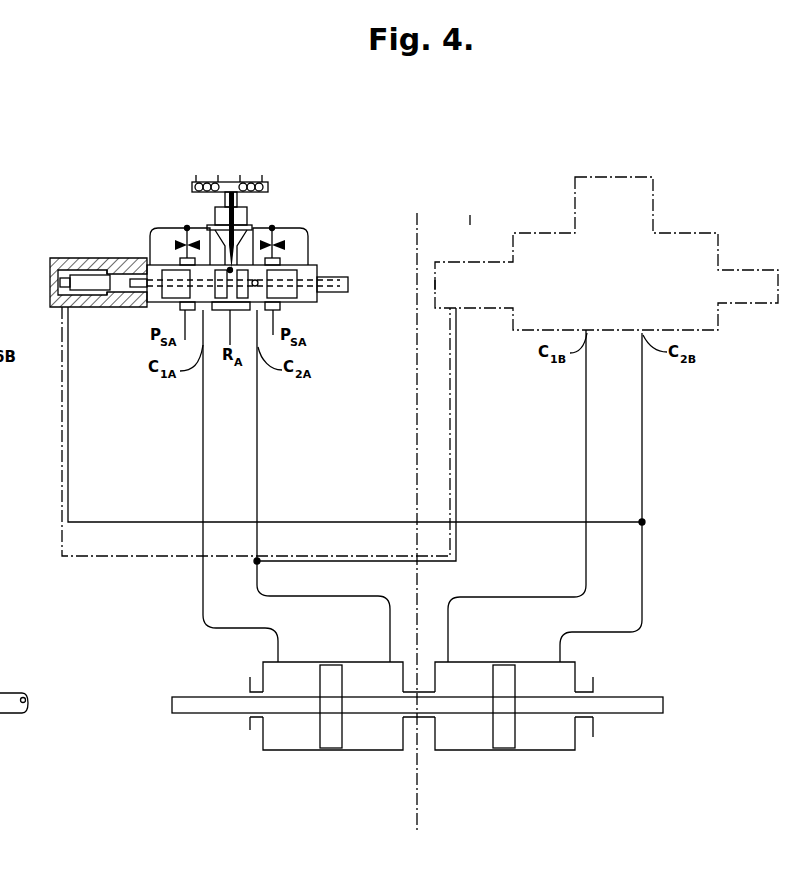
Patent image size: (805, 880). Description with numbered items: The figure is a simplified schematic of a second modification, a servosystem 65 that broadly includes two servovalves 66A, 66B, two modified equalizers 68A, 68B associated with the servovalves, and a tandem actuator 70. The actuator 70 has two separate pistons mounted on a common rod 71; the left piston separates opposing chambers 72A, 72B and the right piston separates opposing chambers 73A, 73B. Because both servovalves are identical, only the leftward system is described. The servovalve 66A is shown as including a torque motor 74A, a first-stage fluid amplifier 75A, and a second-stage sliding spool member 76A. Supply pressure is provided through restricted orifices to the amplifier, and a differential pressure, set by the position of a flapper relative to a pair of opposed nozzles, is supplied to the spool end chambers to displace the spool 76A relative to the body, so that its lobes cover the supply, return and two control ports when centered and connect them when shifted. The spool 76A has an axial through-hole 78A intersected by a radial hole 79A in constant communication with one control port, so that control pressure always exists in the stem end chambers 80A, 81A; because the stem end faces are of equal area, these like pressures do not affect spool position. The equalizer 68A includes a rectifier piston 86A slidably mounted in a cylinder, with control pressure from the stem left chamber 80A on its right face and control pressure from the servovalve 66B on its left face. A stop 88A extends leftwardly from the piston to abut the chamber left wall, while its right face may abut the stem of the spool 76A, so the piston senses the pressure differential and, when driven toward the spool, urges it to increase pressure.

The servosystem 65 is at (476, 180).
The servovalve 66A is at (316, 164).
The servovalve 66B is at (693, 192).
The equalizer 68A is at (85, 236).
The equalizer 68B is at (472, 250).
The tandem actuator 70 is at (424, 754).
The common rod 71 is at (630, 708).
The chamber 72A is at (342, 706).
The chamber 72B is at (351, 706).
The chamber 73A is at (514, 706).
The chamber 73B is at (525, 706).
The torque motor 74A is at (180, 165).
The first-stage fluid amplifier 75A is at (196, 210).
The second-stage sliding spool member 76A is at (290, 293).
The axial through-hole 78A is at (293, 253).
The radial hole 79A is at (255, 230).
The stem end chamber 80A is at (120, 275).
The stem end chamber 81A is at (343, 277).
The rectifier piston 86A is at (86, 285).
The stop 88A is at (63, 267).